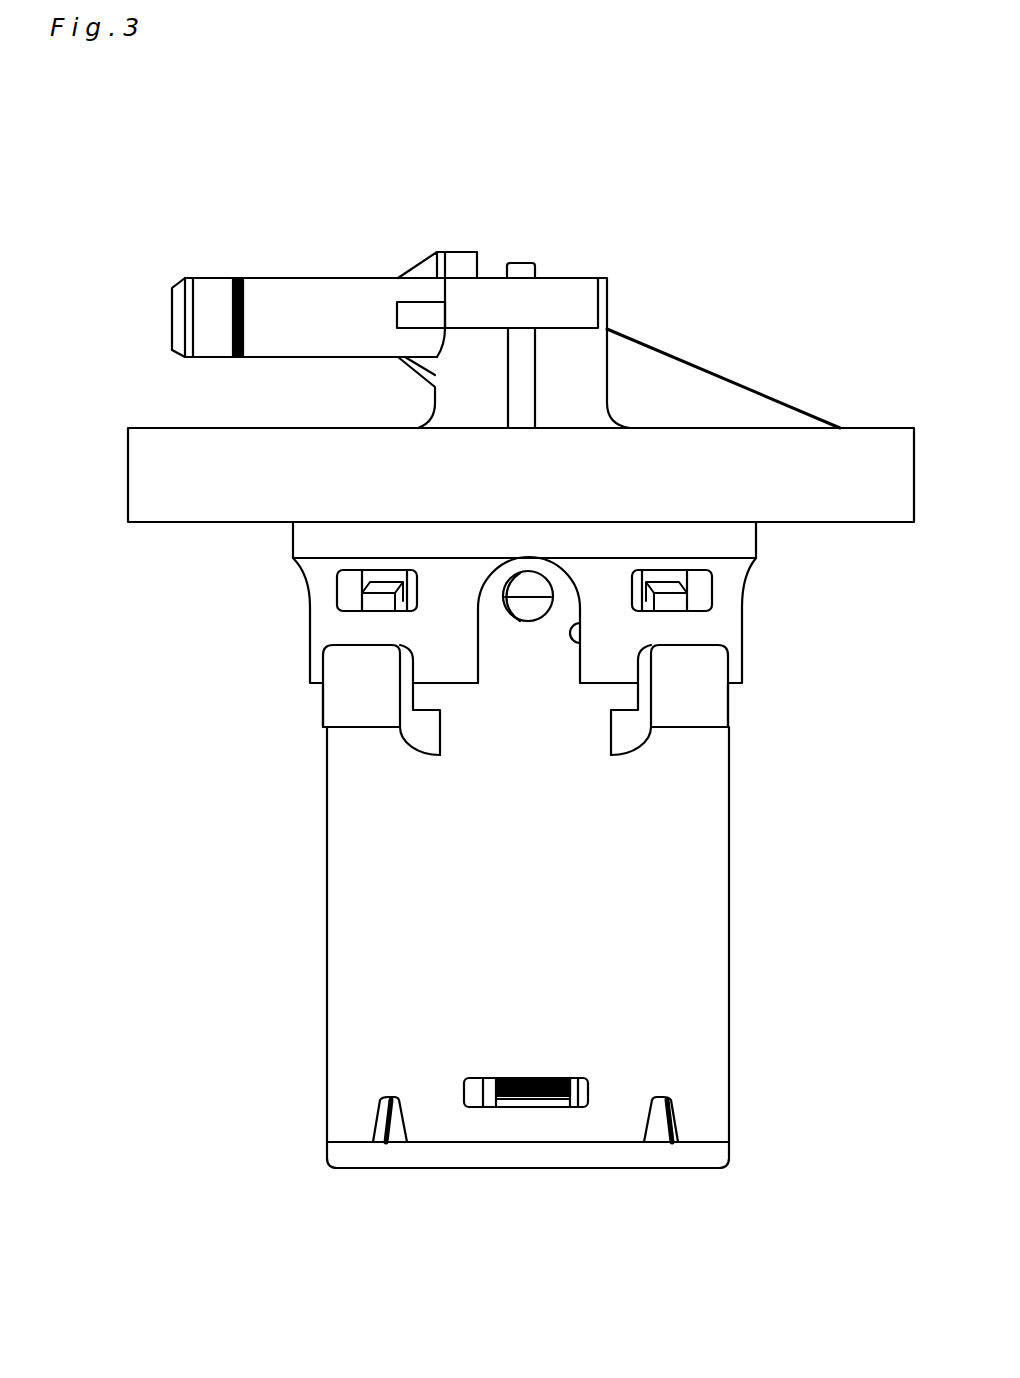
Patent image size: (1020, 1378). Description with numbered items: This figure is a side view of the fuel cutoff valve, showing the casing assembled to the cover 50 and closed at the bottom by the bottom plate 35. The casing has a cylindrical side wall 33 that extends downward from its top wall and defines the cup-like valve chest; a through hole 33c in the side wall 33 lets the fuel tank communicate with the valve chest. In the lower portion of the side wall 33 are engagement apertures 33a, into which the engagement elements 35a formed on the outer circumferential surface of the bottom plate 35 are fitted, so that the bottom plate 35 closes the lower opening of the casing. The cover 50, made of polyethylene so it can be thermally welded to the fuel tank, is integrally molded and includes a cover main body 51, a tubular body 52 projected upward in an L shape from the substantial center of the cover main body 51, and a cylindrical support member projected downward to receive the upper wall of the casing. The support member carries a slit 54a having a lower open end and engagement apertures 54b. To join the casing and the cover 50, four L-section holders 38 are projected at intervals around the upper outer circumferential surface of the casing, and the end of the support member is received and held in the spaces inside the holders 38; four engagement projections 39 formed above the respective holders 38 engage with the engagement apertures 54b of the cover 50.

The side wall 33 is at (345, 888).
The engagement apertures 33a is at (578, 1093).
The through hole 33c is at (520, 622).
The bottom plate 35 is at (370, 1160).
The engagement elements 35a is at (527, 1098).
The holders 38 is at (343, 693).
The engagement projections 39 is at (368, 600).
The cover 50 is at (613, 260).
The cover main body 51 is at (703, 440).
The tubular body 52 is at (308, 276).
The slit 54a is at (572, 650).
The engagement apertures 54b is at (348, 584).